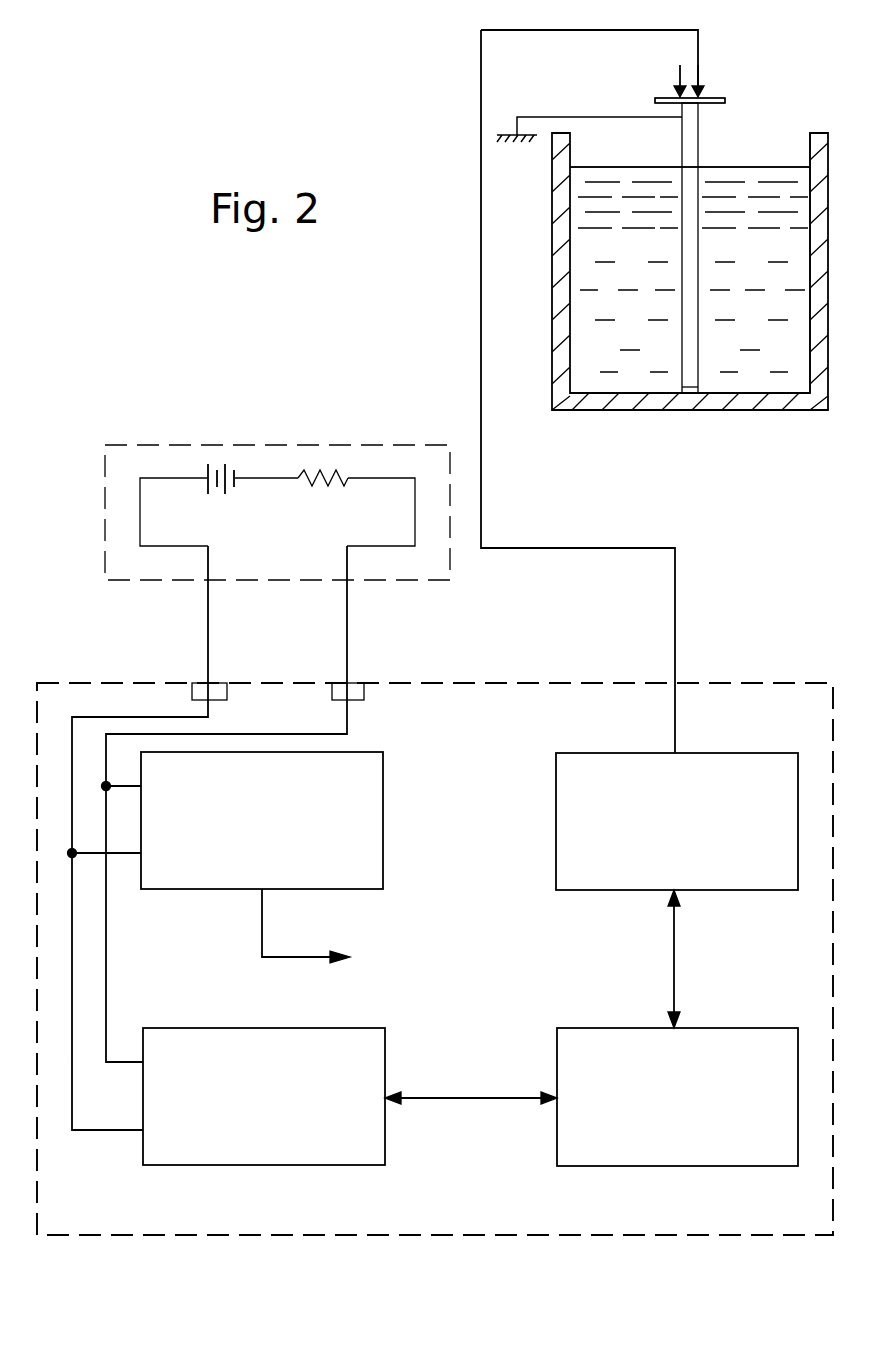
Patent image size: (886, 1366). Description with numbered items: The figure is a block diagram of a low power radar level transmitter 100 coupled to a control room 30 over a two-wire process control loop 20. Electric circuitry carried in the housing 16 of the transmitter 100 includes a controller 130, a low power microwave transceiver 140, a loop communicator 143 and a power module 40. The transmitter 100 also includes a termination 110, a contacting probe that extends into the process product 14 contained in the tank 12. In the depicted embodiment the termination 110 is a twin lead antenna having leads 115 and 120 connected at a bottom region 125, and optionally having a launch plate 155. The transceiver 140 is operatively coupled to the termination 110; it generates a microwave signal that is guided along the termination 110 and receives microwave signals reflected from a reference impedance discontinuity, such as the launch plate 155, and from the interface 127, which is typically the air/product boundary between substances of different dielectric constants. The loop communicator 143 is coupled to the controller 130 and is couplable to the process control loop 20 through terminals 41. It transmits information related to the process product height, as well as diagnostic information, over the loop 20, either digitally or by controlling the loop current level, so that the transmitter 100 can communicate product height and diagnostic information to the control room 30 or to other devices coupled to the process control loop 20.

The termination 110 is at (766, 80).
The launch plate 155 is at (664, 98).
The lead 115 is at (682, 165).
The bottom region 125 is at (690, 396).
The process product 14 is at (552, 340).
The tank 12 is at (828, 172).
The lead 120 is at (698, 162).
The interface 127 is at (777, 155).
The control room 30 is at (225, 445).
The process control loop 20 is at (347, 631).
The terminals 41 is at (200, 683).
The housing 16 is at (468, 683).
The low power radar level transmitter 100 is at (722, 670).
The power module 40 is at (372, 881).
The loop communicator 143 is at (370, 1155).
The low power microwave transceiver 140 is at (635, 879).
The controller 130 is at (621, 1157).